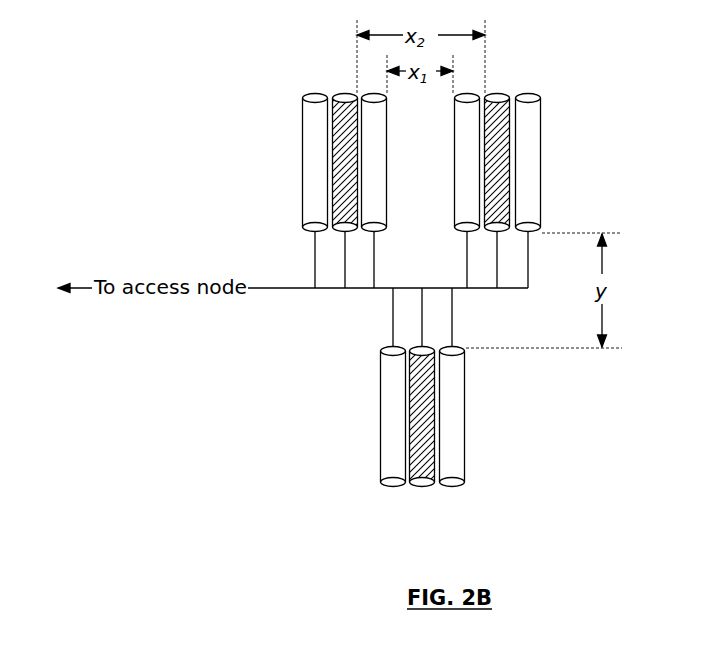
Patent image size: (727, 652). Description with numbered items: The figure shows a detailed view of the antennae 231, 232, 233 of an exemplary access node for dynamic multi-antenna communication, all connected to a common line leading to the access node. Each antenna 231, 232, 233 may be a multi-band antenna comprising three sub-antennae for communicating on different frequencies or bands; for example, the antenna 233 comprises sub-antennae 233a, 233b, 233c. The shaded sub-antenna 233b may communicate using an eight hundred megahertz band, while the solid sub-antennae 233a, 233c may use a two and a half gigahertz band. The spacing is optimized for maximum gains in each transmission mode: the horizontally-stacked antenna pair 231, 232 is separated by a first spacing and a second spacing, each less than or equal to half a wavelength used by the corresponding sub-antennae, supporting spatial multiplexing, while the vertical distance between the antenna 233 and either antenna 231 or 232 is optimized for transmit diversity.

The antenna 231 is at (280, 95).
The antenna 232 is at (567, 95).
The antenna 233 is at (400, 420).
The sub-antenna 233a is at (389, 487).
The sub-antenna 233b is at (420, 487).
The sub-antenna 233c is at (453, 487).